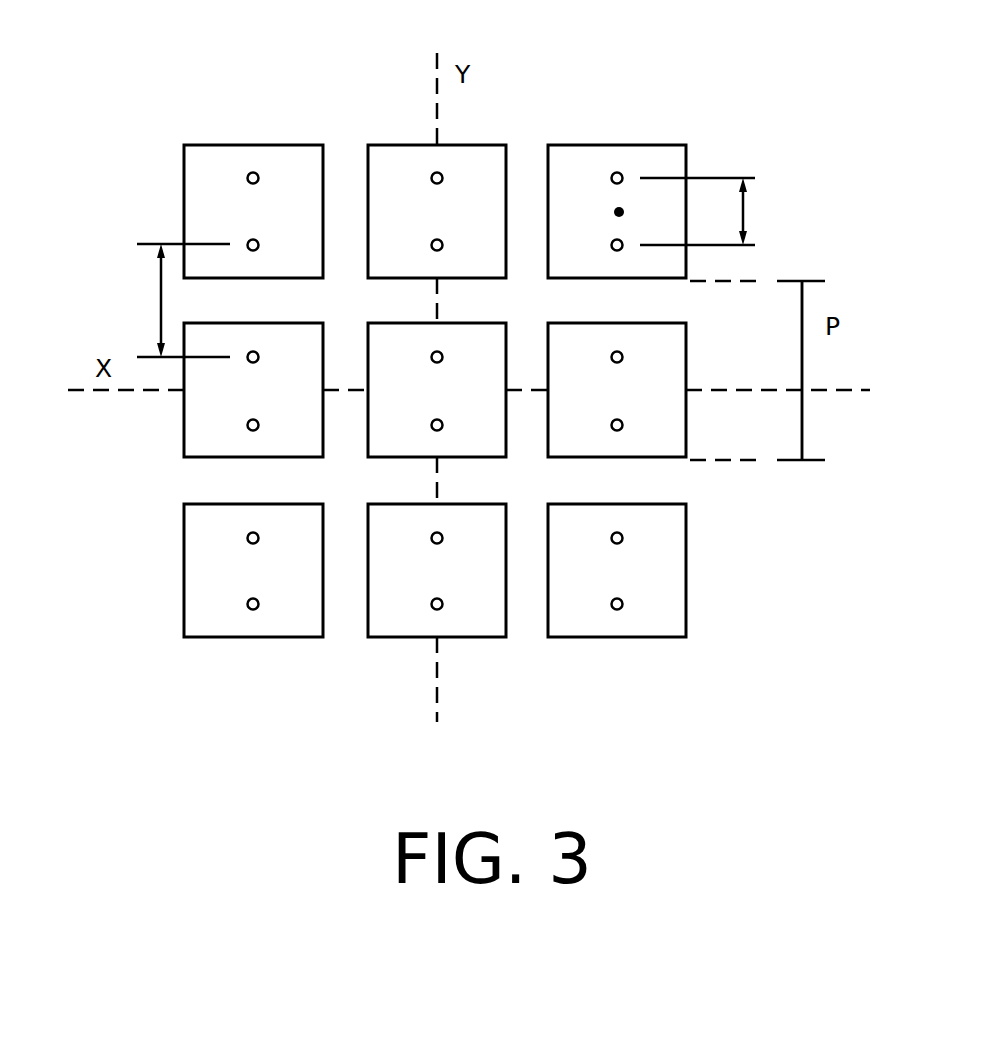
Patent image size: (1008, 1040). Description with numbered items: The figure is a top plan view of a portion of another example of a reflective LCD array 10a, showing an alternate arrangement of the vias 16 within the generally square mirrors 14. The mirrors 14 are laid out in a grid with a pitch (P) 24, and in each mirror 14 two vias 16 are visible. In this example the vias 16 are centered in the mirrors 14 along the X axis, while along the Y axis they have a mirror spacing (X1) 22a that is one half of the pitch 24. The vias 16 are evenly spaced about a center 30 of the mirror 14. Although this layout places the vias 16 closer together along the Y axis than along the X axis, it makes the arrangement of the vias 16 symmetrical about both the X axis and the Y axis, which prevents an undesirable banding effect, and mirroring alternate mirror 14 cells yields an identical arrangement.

The reflective LCD array 10a is at (176, 76).
The mirror 14 is at (480, 620).
The via 16 is at (619, 171).
The center of the mirror 30 is at (622, 211).
The mirror spacing (X1) 22a is at (158, 284).
The pitch (P) 24 is at (802, 412).